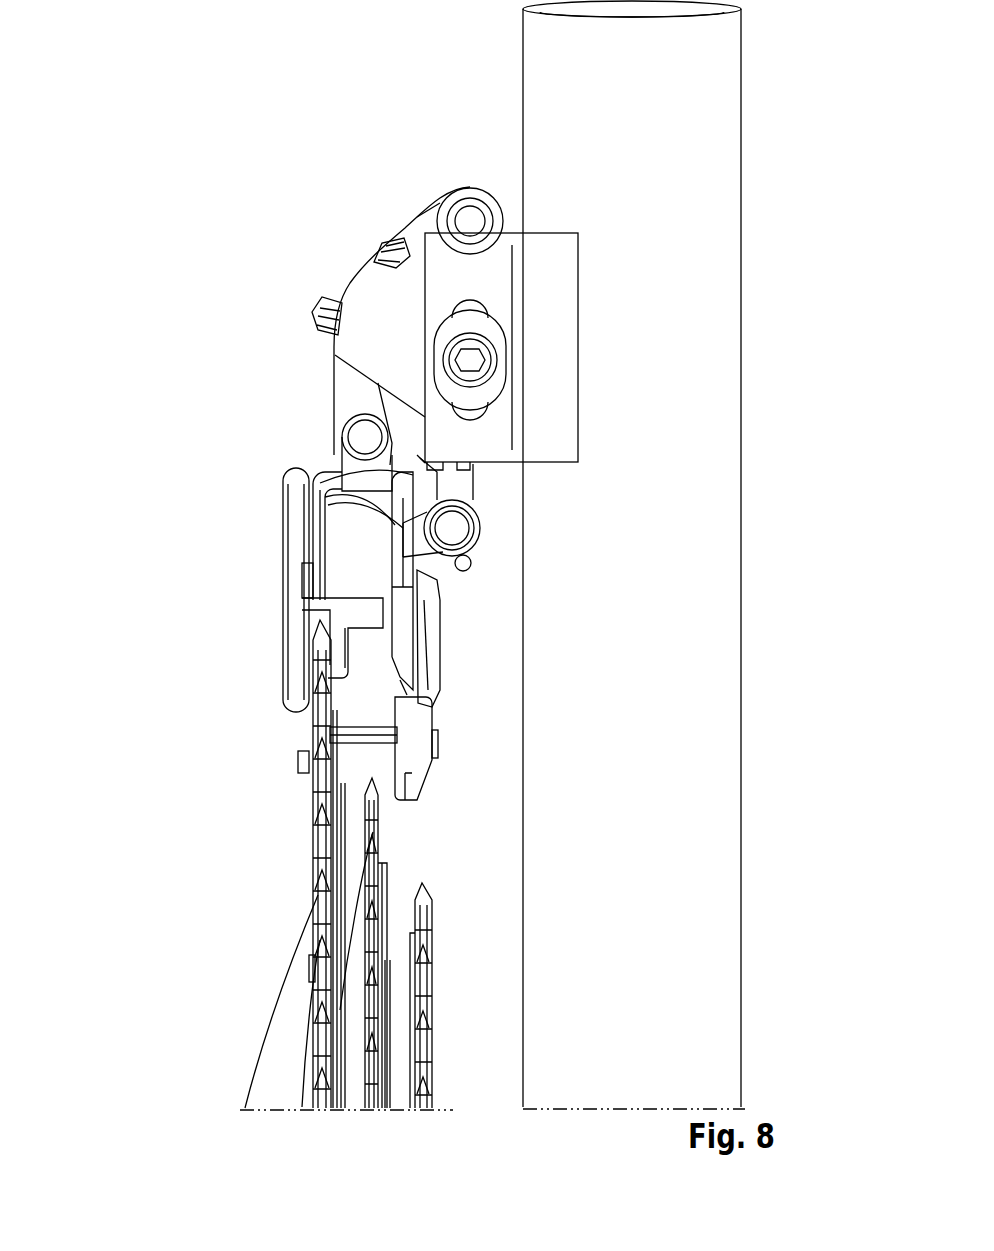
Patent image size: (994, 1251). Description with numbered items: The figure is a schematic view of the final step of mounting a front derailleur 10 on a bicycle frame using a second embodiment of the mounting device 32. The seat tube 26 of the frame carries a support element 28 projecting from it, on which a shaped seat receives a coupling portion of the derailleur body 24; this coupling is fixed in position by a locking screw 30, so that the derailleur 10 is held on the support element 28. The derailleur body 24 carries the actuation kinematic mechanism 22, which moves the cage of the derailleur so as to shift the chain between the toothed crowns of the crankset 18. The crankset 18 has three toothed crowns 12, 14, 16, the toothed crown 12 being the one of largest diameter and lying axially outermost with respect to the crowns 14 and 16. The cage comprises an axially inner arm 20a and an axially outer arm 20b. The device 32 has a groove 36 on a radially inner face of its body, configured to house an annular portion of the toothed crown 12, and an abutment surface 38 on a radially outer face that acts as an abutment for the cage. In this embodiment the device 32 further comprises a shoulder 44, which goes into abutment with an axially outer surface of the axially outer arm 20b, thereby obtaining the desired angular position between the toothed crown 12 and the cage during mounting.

The front derailleur 10 is at (297, 303).
The toothed crown 12 is at (305, 768).
The toothed crown 14 is at (367, 838).
The toothed crown 16 is at (430, 982).
The crankset 18 is at (287, 922).
The axially inner arm 20a is at (398, 540).
The axially outer arm 20b is at (398, 556).
The actuation kinematic mechanism 22 is at (334, 397).
The derailleur body 24 is at (384, 297).
The seat tube 26 is at (643, 173).
The support element 28 is at (550, 378).
The locking screw 30 is at (473, 368).
The device 32 is at (258, 612).
The groove 36 is at (413, 623).
The abutment surface 38 is at (342, 597).
The shoulder 44 is at (295, 555).